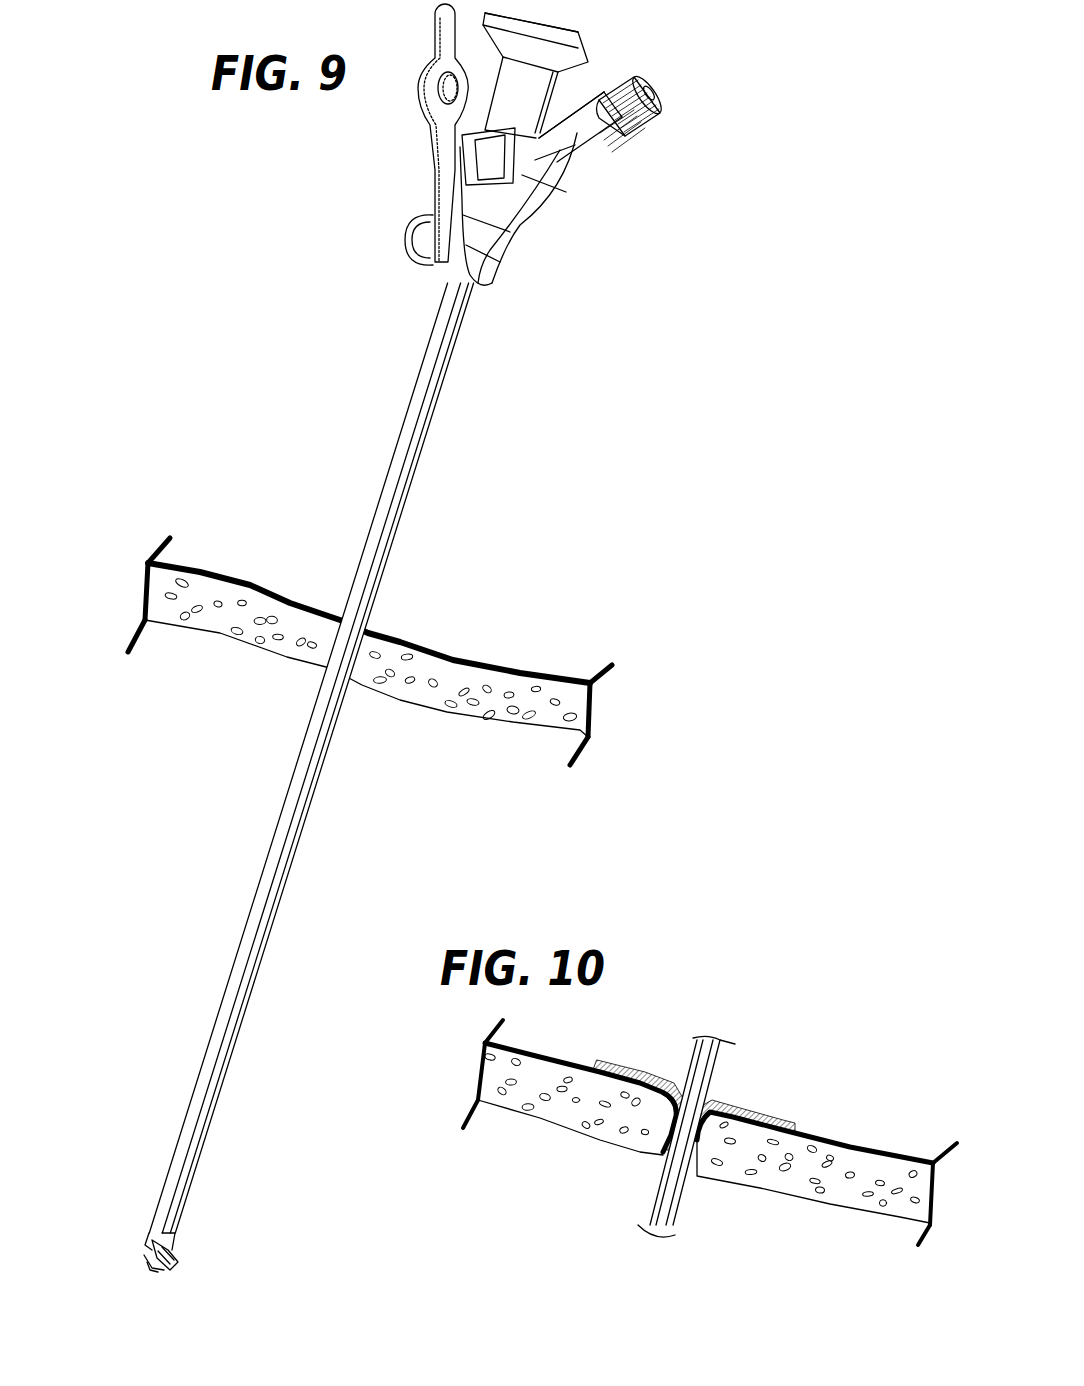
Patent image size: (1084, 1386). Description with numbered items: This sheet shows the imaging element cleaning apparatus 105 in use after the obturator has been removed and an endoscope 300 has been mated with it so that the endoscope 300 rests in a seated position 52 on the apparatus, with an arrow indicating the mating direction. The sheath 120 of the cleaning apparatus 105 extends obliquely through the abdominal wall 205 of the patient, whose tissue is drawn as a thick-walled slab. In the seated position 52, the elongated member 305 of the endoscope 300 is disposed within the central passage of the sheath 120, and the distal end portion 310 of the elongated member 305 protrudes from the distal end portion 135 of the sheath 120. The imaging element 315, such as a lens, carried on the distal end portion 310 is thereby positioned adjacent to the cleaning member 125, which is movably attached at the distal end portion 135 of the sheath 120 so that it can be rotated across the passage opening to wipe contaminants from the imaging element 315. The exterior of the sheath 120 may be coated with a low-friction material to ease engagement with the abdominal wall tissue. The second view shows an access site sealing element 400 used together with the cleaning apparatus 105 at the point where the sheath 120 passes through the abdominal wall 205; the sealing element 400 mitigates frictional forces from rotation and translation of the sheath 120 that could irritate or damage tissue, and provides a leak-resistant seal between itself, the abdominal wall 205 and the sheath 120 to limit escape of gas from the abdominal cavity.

In FIG. 9, the direction arrow (fluid/actuation) 52 is at (563, 100).
In FIG. 9, the imaging element cleaning apparatus 105 is at (528, 230).
In FIG. 9, the sheath 120 is at (415, 420).
In FIG. 10, the sheath 120 is at (708, 1067).
In FIG. 9, the cleaning member 125 is at (178, 1275).
In FIG. 9, the distal end portion 135 is at (172, 1223).
In FIG. 9, the abdominal wall 205 is at (483, 687).
In FIG. 10, the abdominal wall 205 is at (803, 1180).
In FIG. 9, the endoscope 300 is at (573, 50).
In FIG. 9, the elongated member 305 is at (150, 1245).
In FIG. 9, the distal end portion 310 is at (143, 1262).
In FIG. 9, the imaging element 315 is at (148, 1272).
In FIG. 10, the access site sealing element 400 is at (783, 1117).